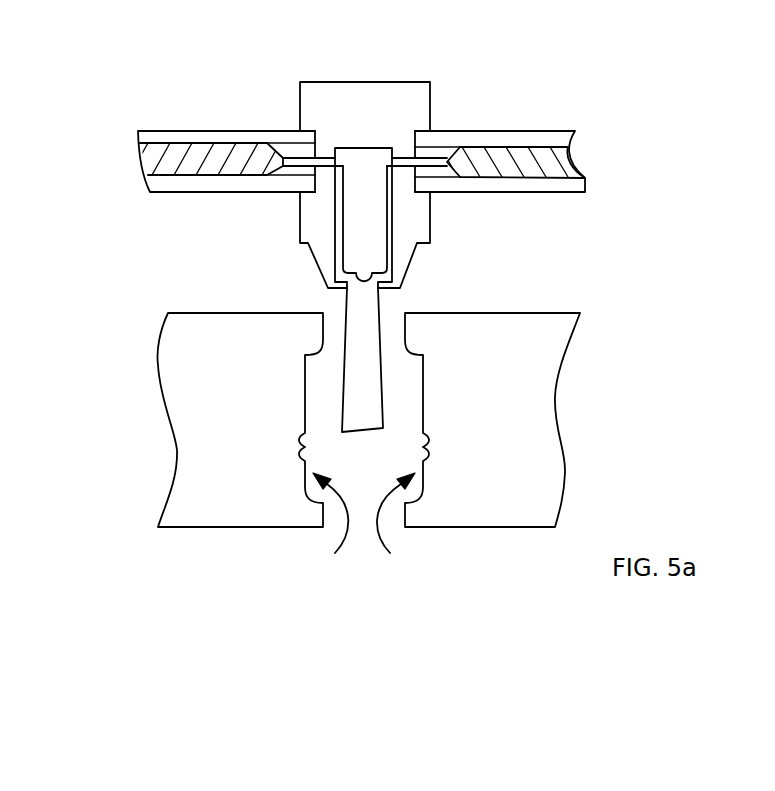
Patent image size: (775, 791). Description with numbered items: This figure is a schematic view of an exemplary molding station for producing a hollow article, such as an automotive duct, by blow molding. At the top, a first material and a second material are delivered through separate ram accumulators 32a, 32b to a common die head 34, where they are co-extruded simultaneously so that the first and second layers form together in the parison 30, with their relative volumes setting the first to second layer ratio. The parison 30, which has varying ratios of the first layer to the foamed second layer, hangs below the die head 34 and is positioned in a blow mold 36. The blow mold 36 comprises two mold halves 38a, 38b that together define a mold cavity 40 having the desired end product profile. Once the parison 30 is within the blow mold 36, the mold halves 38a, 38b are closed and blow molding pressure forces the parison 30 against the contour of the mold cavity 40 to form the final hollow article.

The parison 30 is at (375, 342).
The ram accumulator 32a is at (233, 160).
The ram accumulator 32b is at (510, 165).
The die head 34 is at (422, 222).
The blow mold 36 is at (663, 333).
The mold half 38a is at (228, 462).
The mold half 38b is at (518, 438).
The mold cavity 40 is at (362, 524).